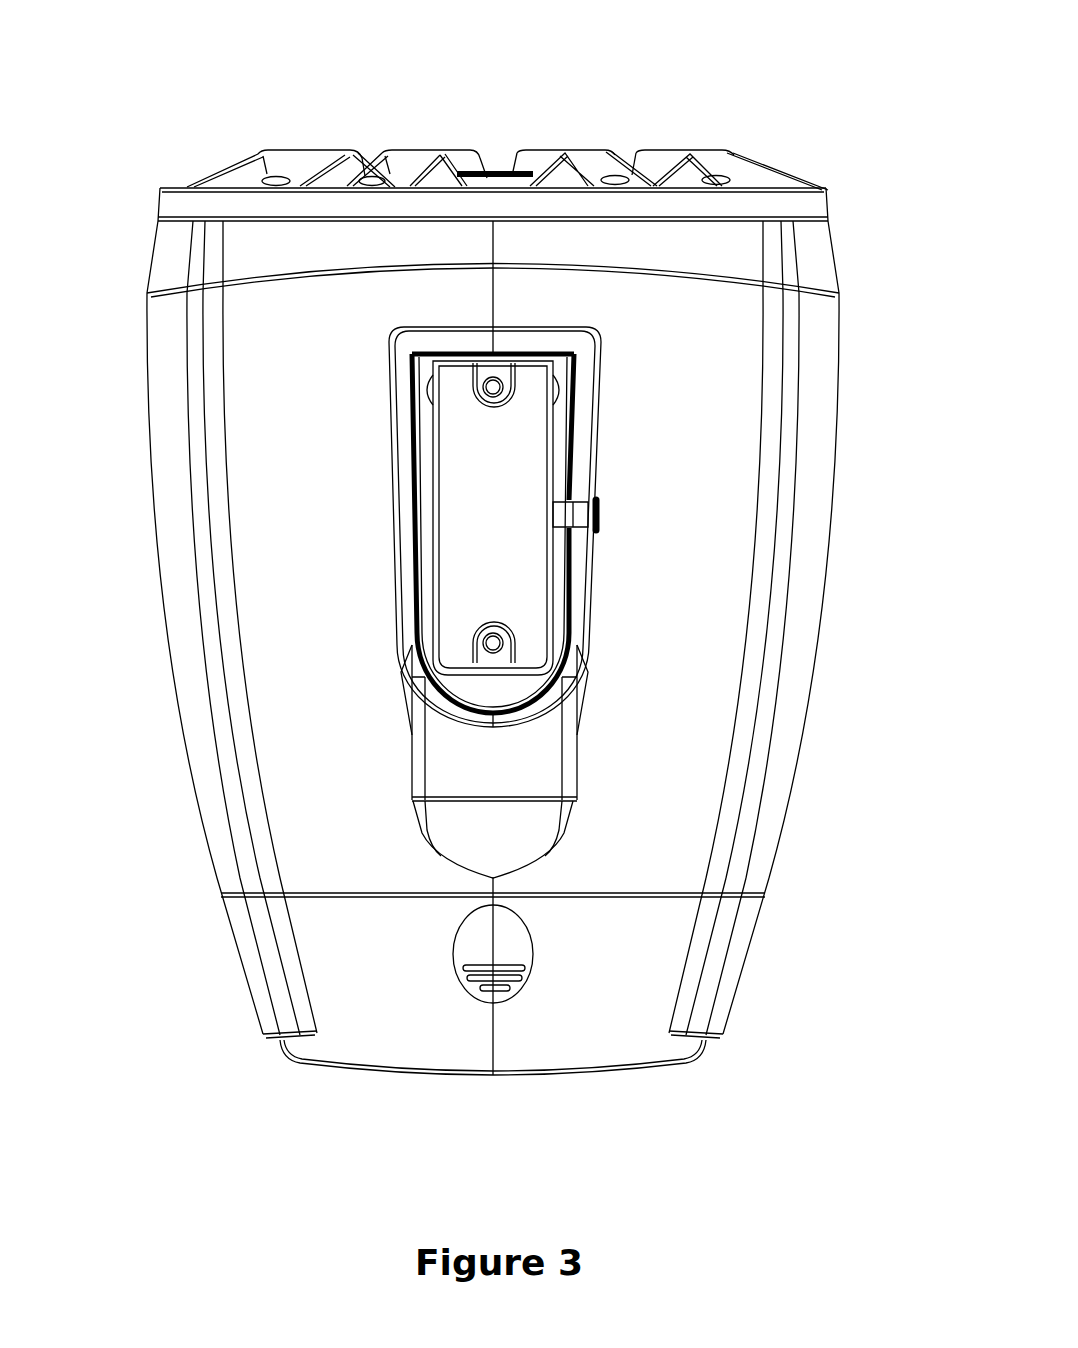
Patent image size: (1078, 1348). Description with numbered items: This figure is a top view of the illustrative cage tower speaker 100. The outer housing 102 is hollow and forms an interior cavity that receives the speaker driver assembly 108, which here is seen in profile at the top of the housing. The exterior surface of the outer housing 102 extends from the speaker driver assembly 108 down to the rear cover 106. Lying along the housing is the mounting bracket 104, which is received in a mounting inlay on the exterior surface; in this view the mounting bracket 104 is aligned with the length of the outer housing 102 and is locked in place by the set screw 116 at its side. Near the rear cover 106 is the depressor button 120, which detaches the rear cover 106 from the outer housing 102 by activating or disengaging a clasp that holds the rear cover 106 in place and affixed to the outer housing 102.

The cage tower speaker 100 is at (110, 90).
The outer housing 102 is at (805, 521).
The mounting bracket 104 is at (540, 385).
The rear cover 106 is at (723, 968).
The speaker driver assembly 108 is at (753, 170).
The set screw 116 is at (597, 500).
The depressor button 120 is at (513, 938).